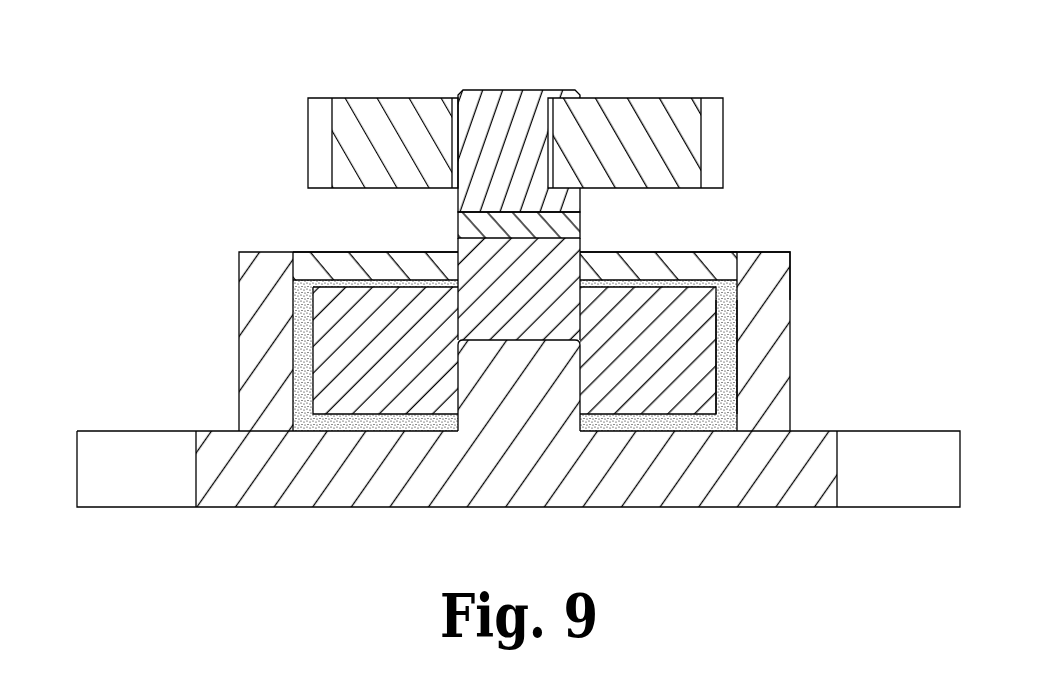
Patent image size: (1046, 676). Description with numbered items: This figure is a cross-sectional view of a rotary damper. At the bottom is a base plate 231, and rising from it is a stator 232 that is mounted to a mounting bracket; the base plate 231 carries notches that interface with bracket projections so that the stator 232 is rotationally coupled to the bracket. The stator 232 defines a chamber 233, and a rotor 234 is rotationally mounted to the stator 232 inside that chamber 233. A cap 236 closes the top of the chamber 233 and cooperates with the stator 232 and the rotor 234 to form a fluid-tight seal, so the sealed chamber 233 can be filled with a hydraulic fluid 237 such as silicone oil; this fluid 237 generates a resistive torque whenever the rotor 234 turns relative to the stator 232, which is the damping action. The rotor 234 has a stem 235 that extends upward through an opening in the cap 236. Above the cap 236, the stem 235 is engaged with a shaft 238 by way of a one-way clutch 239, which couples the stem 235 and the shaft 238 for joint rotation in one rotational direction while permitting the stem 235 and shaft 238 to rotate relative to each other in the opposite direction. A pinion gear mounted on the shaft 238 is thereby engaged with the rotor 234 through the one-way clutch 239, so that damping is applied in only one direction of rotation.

The base plate 231 is at (110, 431).
The stator 232 is at (239, 347).
The chamber 233 is at (295, 398).
The rotor 234 is at (712, 320).
The stem 235 is at (580, 250).
The cap 236 is at (712, 251).
The hydraulic fluid 237 is at (732, 366).
The shaft 238 is at (507, 95).
The one-way clutch 239 is at (458, 224).